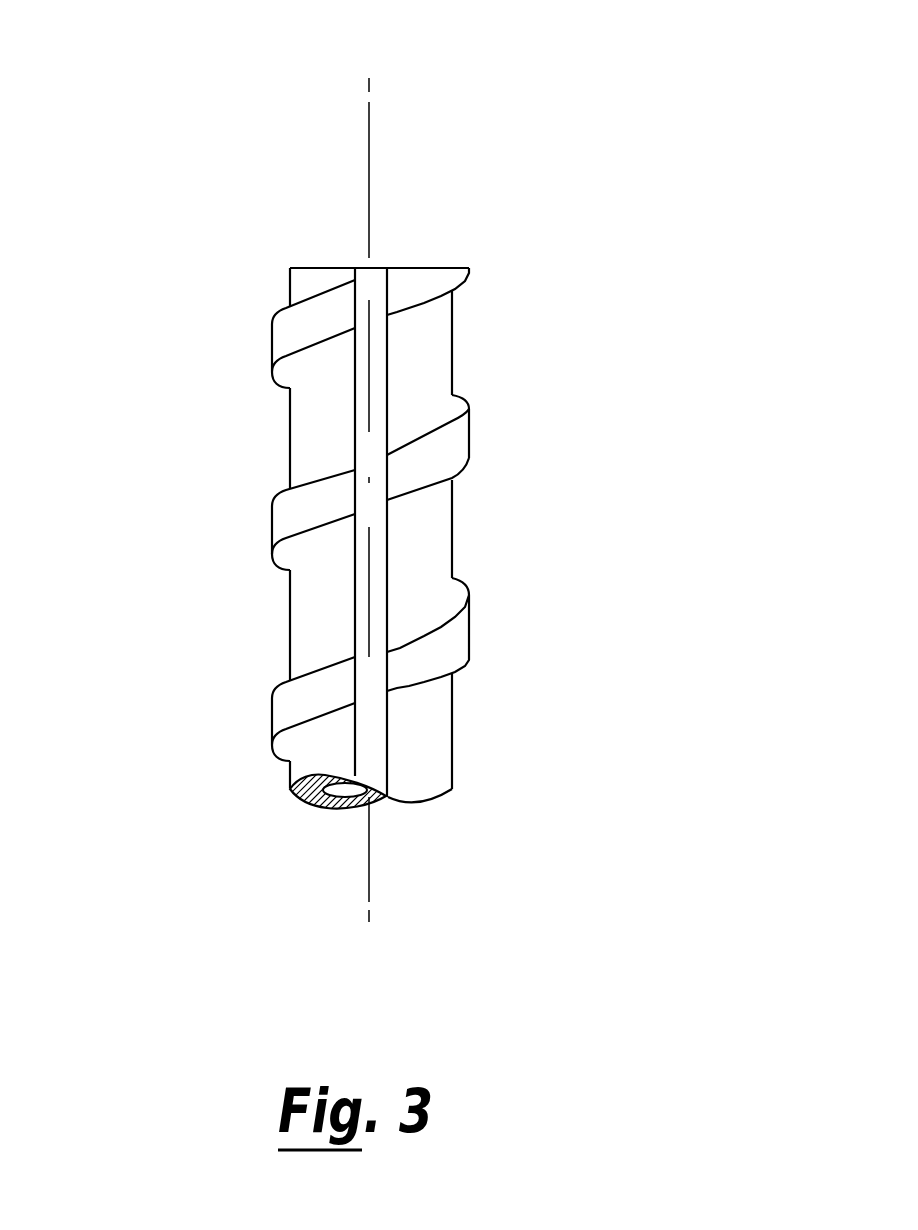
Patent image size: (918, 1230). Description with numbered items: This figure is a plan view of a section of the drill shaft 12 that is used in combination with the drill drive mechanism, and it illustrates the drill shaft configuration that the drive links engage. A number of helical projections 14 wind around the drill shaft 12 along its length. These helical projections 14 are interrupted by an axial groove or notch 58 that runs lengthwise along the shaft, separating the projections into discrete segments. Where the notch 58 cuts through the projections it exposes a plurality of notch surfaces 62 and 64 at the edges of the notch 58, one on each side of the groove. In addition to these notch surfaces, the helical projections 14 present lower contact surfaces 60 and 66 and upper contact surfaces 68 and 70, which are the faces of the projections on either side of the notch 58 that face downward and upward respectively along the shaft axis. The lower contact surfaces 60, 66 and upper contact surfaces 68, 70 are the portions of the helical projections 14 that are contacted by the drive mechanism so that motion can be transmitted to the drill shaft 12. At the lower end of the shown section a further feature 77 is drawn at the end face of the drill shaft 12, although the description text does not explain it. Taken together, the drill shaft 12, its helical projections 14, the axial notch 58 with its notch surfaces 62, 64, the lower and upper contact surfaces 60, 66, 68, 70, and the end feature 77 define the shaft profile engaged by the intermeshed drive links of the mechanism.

The drill shaft 12 is at (432, 743).
The helical projections 14 is at (283, 712).
The axial groove or notch 58 is at (378, 278).
The lower contact surface 60 is at (318, 528).
The notch surface 62 is at (389, 487).
The notch surface 64 is at (355, 478).
The lower contact surface 66 is at (388, 503).
The upper contact surface 68 is at (403, 450).
The upper contact surface 70 is at (350, 468).
The hole 77 is at (347, 793).